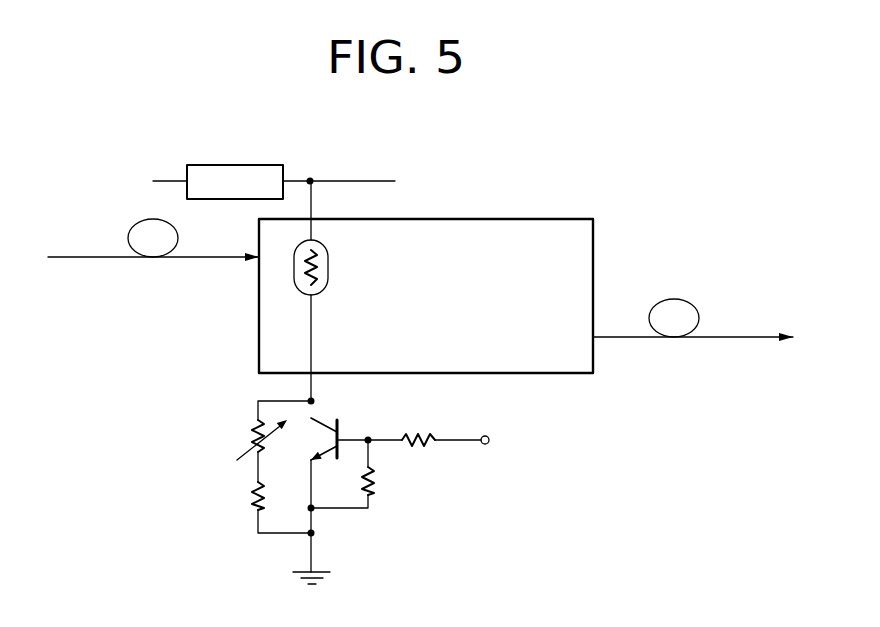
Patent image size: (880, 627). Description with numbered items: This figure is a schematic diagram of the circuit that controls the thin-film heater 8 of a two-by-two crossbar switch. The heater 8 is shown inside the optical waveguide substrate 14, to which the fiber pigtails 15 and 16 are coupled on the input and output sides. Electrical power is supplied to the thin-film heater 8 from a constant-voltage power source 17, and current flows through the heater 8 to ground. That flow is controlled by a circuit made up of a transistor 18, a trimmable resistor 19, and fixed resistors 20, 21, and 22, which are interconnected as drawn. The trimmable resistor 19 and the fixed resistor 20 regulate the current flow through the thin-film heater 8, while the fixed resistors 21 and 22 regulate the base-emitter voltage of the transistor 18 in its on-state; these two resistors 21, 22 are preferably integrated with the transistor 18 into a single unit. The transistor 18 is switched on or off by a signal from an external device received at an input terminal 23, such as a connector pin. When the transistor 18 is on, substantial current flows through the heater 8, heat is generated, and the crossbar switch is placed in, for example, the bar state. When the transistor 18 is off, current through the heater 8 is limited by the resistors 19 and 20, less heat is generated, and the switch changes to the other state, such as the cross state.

The thin-film heater 8 is at (328, 275).
The optical waveguide substrate 14 is at (593, 236).
The fiber pigtail 15 is at (72, 257).
The fiber pigtail 16 is at (730, 337).
The constant-voltage power source 17 is at (262, 165).
The transistor 18 is at (345, 425).
The trimmable resistor 19 is at (240, 435).
The fixed resistor 20 is at (240, 498).
The fixed resistor 21 is at (382, 483).
The fixed resistor 22 is at (426, 430).
The input terminal 23 is at (487, 434).